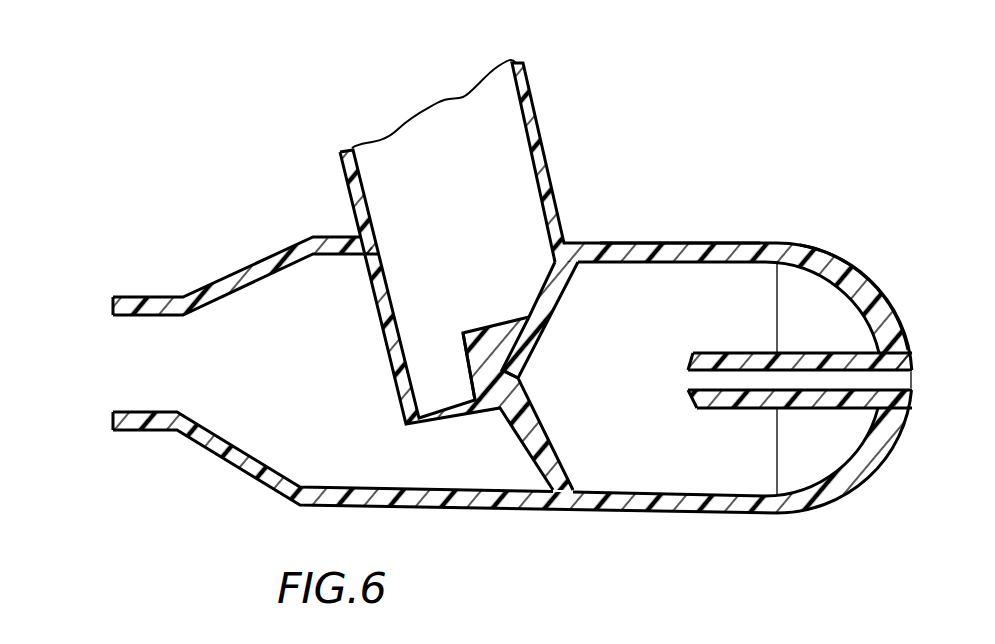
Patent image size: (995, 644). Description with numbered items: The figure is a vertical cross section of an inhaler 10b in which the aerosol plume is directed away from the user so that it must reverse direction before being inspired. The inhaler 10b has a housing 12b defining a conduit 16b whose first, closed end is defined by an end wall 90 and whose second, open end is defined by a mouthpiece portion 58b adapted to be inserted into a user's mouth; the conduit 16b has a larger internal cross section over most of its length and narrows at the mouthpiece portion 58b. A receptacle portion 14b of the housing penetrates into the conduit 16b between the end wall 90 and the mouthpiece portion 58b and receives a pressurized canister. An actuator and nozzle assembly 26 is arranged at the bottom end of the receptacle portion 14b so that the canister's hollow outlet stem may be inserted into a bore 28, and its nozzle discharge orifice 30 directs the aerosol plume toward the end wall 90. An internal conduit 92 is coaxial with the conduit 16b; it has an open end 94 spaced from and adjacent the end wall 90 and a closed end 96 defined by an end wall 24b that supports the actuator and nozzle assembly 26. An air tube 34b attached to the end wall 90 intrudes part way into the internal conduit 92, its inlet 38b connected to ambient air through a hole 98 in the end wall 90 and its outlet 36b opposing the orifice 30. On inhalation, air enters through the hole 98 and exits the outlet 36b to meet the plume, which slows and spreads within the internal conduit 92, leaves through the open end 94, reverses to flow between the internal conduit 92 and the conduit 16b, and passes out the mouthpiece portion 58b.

The inhaler 10b is at (482, 582).
The housing 12b is at (541, 512).
The receptacle portion 14b is at (533, 100).
The conduit 16b is at (694, 252).
The end wall 24b is at (541, 454).
The actuator and nozzle assembly 26 is at (452, 338).
The bore 28 is at (488, 350).
The nozzle discharge orifice 30 is at (519, 376).
The air tube 34b is at (820, 337).
The outlet 36b is at (683, 389).
The inlet 38b is at (884, 382).
The mouthpiece portion 58b is at (140, 297).
The end wall 90 is at (873, 297).
The internal conduit 92 is at (728, 486).
The open end 94 is at (778, 412).
The closed end 96 is at (572, 282).
The hole 98 is at (914, 372).